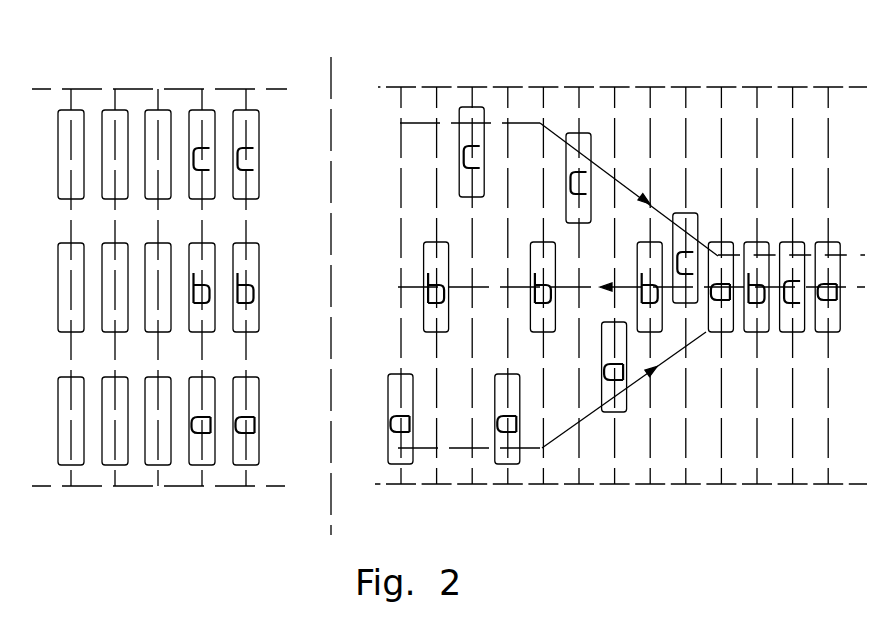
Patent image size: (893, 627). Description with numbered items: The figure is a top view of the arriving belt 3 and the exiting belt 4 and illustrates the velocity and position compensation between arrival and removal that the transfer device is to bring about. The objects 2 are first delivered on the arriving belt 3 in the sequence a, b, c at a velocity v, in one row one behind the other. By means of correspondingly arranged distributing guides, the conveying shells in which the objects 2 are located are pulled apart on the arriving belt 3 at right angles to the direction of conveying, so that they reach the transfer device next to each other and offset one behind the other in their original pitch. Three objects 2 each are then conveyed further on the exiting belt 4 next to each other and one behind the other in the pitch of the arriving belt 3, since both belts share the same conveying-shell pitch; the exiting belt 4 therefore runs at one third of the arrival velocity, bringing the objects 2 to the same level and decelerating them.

The object 2 is at (465, 115).
The arriving belt 3 is at (612, 496).
The exiting belt 4 is at (89, 498).